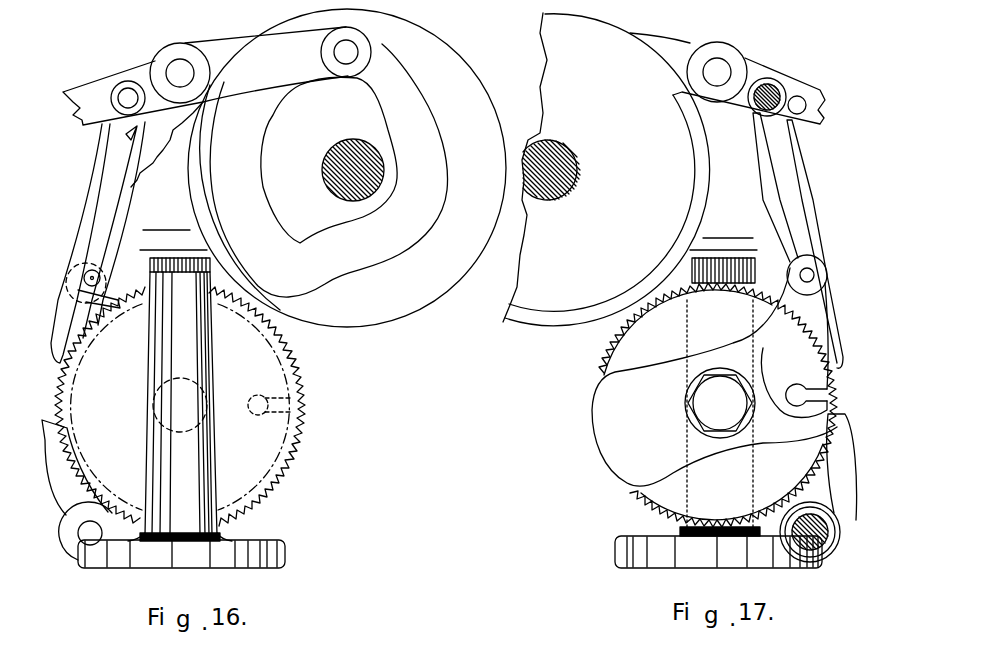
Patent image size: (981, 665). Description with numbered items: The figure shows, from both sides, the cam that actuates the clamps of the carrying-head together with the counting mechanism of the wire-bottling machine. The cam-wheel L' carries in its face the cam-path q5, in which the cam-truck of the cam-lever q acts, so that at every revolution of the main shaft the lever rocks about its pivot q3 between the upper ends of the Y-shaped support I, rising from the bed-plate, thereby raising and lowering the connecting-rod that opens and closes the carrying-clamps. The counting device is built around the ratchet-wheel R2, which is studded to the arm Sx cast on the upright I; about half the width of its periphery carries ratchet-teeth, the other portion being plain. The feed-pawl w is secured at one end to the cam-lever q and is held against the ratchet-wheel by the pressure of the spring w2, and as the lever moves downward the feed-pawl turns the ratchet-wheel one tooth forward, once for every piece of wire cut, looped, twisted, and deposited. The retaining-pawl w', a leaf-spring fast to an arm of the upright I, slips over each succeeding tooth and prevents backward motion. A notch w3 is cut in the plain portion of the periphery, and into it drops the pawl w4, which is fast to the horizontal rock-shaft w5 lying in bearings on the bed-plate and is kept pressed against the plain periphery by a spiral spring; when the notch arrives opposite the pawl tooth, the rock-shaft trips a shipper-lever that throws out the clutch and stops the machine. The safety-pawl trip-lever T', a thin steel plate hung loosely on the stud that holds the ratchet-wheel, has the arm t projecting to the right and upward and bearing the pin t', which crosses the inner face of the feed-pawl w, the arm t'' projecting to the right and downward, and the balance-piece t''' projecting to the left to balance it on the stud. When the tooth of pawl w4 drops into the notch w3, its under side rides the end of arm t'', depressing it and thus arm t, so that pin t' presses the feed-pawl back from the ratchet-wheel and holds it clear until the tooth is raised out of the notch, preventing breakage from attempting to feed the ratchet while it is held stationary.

In FIG. 16, the cam-lever q is at (416, 13).
In FIG. 17, the cam-lever q is at (798, 88).
In FIG. 16, the pivot of lever q q3 is at (180, 73).
In FIG. 17, the pivot of lever q q3 is at (717, 72).
In FIG. 16, the cam-path q5 is at (328, 170).
In FIG. 16, the shaft E' is at (338, 170).
In FIG. 17, the shaft E' is at (551, 181).
In FIG. 16, the cam-wheel L' is at (347, 168).
In FIG. 17, the cam-wheel L' is at (606, 169).
In FIG. 16, the Y-shaped support I is at (181, 335).
In FIG. 17, the Y-shaped support I is at (718, 376).
In FIG. 16, the feed-pawl w is at (114, 230).
In FIG. 17, the feed-pawl w is at (777, 170).
In FIG. 16, the spring w2 is at (92, 152).
In FIG. 17, the spring w2 is at (803, 150).
In FIG. 16, the retaining-pawl w' is at (123, 245).
In FIG. 17, the retaining-pawl w' is at (772, 239).
In FIG. 16, the pin t' is at (75, 275).
In FIG. 17, the pin t' is at (820, 272).
In FIG. 16, the arm of safety-pawl t is at (99, 298).
In FIG. 17, the arm of safety-pawl t is at (792, 350).
In FIG. 16, the ratchet-wheel R2 is at (180, 406).
In FIG. 17, the ratchet-wheel R2 is at (718, 405).
In FIG. 16, the arm Sx is at (180, 405).
In FIG. 16, the notch w3 is at (300, 410).
In FIG. 17, the notch w3 is at (806, 395).
In FIG. 16, the pawl arm end wx is at (66, 428).
In FIG. 16, the pawl w4 is at (75, 467).
In FIG. 17, the pawl w4 is at (841, 467).
In FIG. 16, the rock-shaft w5 is at (78, 532).
In FIG. 17, the rock-shaft w5 is at (818, 560).
In FIG. 17, the nut S is at (720, 403).
In FIG. 17, the safety-pawl trip-lever T' is at (714, 377).
In FIG. 17, the arm of safety-pawl t'' is at (773, 435).
In FIG. 17, the balance-piece t''' is at (628, 415).